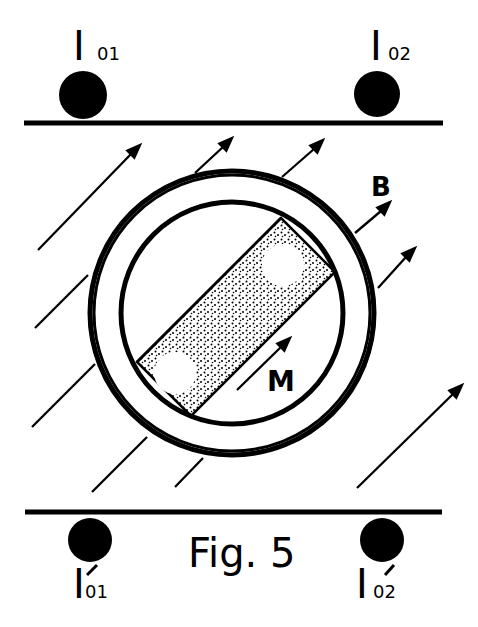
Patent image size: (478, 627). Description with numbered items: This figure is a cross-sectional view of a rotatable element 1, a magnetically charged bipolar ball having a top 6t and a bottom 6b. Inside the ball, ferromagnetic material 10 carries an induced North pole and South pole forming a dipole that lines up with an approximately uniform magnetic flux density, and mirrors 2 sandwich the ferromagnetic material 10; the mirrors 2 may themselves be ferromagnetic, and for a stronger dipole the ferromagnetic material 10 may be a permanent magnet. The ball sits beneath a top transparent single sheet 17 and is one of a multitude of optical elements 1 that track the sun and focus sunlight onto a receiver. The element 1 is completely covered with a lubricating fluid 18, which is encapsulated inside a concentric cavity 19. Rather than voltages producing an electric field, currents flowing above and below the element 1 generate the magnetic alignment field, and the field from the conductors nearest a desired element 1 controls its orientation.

The rotatable element 1 is at (243, 316).
The mirrors 2 is at (262, 236).
The top 6t is at (128, 330).
The bottom 6b is at (273, 402).
The ferromagnetic material 10 is at (220, 279).
The top transparent single sheet 17 is at (347, 137).
The lubricating fluid 18 is at (328, 400).
The concentric cavity 19 is at (378, 317).